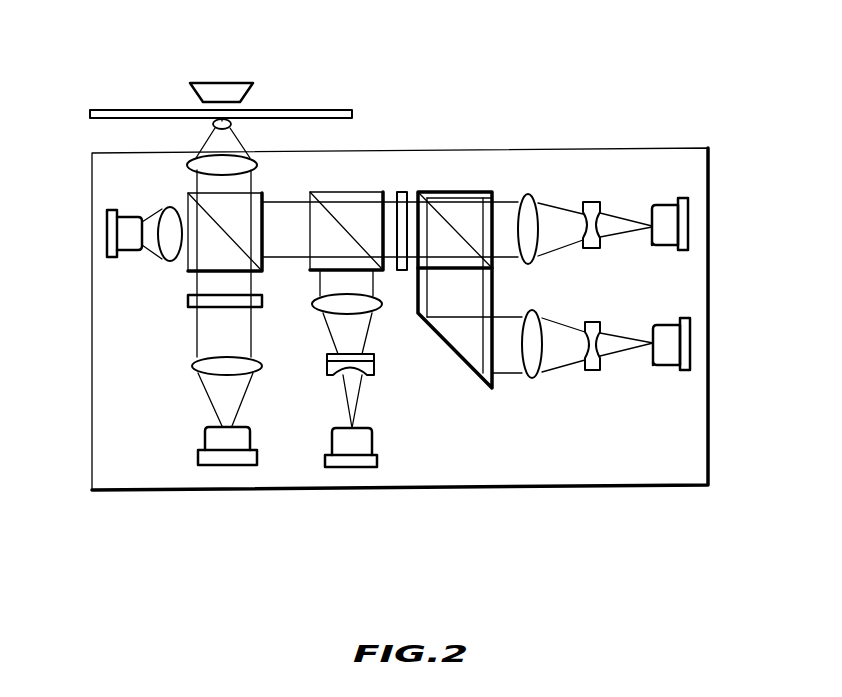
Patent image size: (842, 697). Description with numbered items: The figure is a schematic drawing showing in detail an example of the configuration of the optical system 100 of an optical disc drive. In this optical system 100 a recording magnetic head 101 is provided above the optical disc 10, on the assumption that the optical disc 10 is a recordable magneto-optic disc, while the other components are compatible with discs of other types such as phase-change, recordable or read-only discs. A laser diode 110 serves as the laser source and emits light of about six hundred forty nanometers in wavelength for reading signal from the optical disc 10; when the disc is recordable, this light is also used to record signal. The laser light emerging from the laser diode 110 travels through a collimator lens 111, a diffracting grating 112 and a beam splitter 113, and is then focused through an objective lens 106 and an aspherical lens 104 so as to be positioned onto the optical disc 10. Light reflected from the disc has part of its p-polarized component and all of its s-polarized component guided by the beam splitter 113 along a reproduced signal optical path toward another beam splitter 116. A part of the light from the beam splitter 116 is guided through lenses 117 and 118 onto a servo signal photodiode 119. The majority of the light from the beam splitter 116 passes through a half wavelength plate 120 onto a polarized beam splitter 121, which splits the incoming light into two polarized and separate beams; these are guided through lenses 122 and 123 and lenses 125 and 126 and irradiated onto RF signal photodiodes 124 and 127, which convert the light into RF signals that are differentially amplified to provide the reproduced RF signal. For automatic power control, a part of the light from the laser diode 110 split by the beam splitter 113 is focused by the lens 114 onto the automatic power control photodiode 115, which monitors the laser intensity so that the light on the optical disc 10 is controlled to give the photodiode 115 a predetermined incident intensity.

The optical system 100 is at (652, 143).
The optical disc 10 is at (130, 110).
The recording magnetic head 101 is at (220, 83).
The aspherical lens 104 is at (232, 125).
The objective lens 106 is at (195, 160).
The laser diode 110 is at (227, 465).
The collimator lens 111 is at (192, 364).
The diffracting grating 112 is at (188, 300).
The beam splitter 113 is at (210, 250).
The lens 114 is at (162, 208).
The automatic power control photodiode 115 is at (107, 232).
The beam splitter 116 is at (350, 192).
The lens 117 is at (382, 303).
The lens 118 is at (374, 363).
The servo signal photodiode 119 is at (353, 467).
The half wavelength plate 120 is at (402, 192).
The polarized beam splitter 121 is at (472, 368).
The lens 122 is at (528, 194).
The lens 123 is at (592, 202).
The RF signal photodiode 124 is at (688, 225).
The lens 125 is at (533, 380).
The lens 126 is at (593, 372).
The RF signal photodiode 127 is at (690, 343).